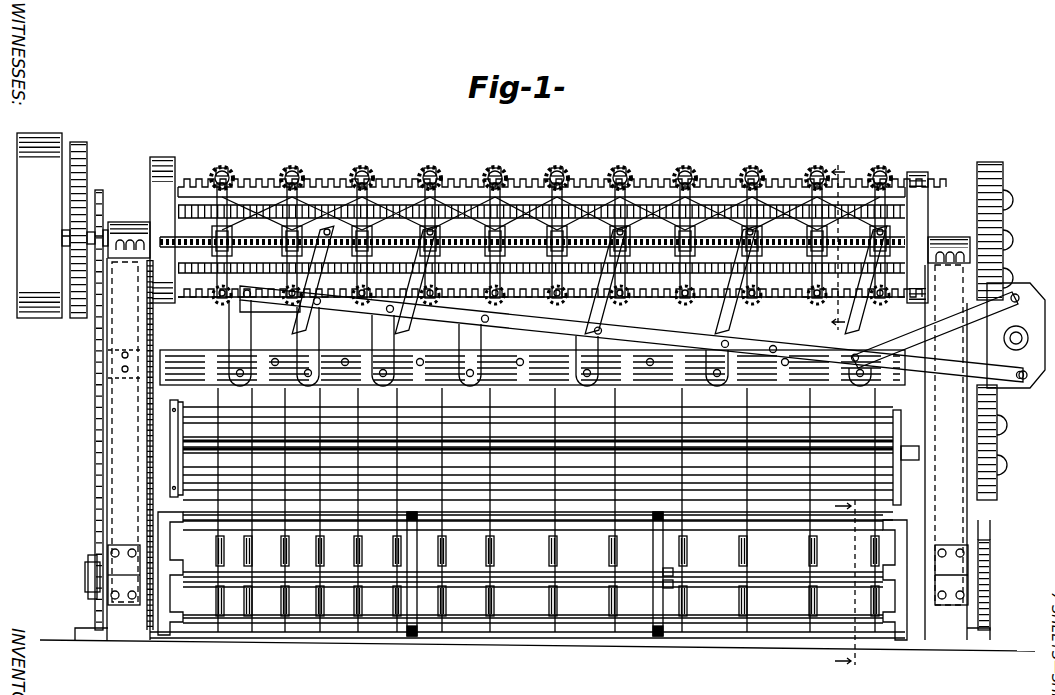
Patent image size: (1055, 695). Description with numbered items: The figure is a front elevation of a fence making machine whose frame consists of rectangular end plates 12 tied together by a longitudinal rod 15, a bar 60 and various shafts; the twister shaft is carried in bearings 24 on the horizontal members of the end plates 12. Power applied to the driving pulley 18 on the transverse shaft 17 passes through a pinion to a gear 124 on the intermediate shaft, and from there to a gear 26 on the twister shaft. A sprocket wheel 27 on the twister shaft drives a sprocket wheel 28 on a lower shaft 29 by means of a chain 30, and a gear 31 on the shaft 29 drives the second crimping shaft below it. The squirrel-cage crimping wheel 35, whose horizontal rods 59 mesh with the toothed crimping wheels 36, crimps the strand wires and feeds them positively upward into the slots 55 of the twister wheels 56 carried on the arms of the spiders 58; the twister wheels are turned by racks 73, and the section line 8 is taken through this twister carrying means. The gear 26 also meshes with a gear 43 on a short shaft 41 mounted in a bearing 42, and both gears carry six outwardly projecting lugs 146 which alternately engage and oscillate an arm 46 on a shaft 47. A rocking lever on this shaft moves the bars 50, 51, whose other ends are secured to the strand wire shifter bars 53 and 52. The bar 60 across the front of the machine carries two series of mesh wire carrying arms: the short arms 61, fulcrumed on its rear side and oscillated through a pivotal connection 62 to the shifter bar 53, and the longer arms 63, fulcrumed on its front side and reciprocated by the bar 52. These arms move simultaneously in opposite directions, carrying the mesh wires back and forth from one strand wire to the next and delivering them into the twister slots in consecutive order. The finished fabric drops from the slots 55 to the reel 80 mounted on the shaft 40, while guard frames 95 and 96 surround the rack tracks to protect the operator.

The driving pulley 18 is at (39, 225).
The transverse shaft 17 is at (62, 240).
The sprocket wheel 27 is at (103, 230).
The chain 30 is at (95, 500).
The bearing 24 is at (127, 232).
The end plates 12 is at (537, 449).
The guard frame 95 is at (172, 166).
The guard frame 96 is at (920, 172).
The gear 26 is at (1003, 175).
The outwardly projecting lugs 146 is at (1008, 262).
The short shaft 41 is at (975, 418).
The gear 31 is at (990, 560).
The gear 43 is at (985, 540).
The arm 46 is at (1018, 298).
The shaft 47 is at (1008, 340).
The bearing 42 is at (1010, 345).
The bar 50 is at (918, 355).
The bar 51 is at (943, 338).
The racks 73 is at (576, 190).
The strand wire shifter bar 53 is at (532, 270).
The slots 55 is at (228, 170).
The twister wheels 56 is at (775, 165).
The section line 8 is at (833, 245).
The short arms 61 is at (640, 318).
The bar 52 is at (698, 335).
The pivotal connection 62 is at (518, 333).
The arms 63 is at (232, 312).
The bar 60 is at (190, 352).
The reel 80 is at (185, 420).
The shaft 40 is at (905, 482).
The longitudinal rod 15 is at (854, 583).
The horizontal rods 59 is at (520, 515).
The crimping wheels 36 is at (300, 556).
The spiders 58 is at (412, 636).
The crimping wheel 35 is at (172, 636).
The shaft 29 is at (152, 636).
The sprocket wheel 28 is at (88, 582).
The gear 124 is at (78, 318).